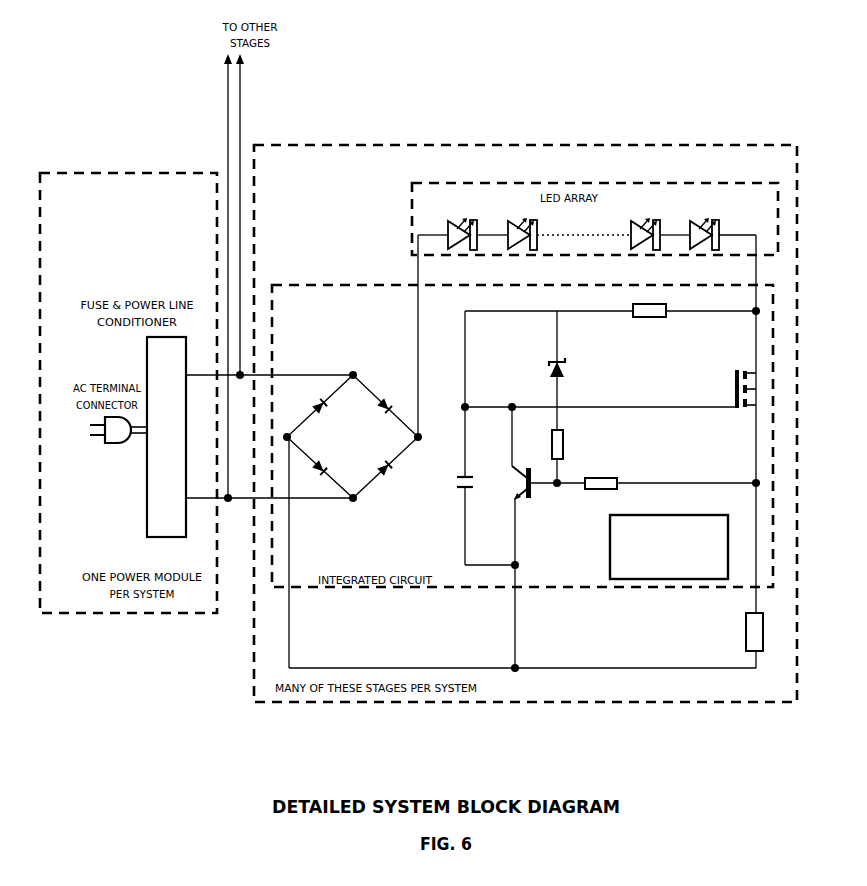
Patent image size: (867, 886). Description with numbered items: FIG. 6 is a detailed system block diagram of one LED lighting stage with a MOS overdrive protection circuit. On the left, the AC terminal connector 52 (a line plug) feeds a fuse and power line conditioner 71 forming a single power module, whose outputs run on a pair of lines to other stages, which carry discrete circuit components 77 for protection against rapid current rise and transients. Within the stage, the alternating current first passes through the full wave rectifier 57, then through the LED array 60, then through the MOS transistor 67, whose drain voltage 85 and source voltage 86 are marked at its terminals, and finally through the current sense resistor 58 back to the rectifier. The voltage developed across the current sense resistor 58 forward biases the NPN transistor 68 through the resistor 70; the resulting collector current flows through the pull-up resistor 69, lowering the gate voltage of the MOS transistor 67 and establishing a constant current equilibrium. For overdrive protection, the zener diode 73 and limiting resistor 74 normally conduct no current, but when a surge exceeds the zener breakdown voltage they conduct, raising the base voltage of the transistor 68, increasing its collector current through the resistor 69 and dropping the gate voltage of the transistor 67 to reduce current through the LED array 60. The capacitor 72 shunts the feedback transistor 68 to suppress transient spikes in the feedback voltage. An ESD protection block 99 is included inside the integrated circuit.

The AC terminal connector 52 is at (118, 439).
The fuse and power line conditioner 71 is at (166, 447).
The discrete circuit components 77 is at (241, 278).
The full wave rectifier 57 is at (352, 436).
The LED array 60 is at (583, 222).
The pull-up resistor 69 is at (649, 320).
The zener diode 73 is at (566, 370).
The limiting resistor 74 is at (566, 444).
The MOS transistor 67 is at (731, 389).
The drain voltage 85 is at (761, 365).
The source voltage 86 is at (761, 408).
The capacitor 72 is at (455, 490).
The NPN transistor 68 is at (525, 464).
The resistor 70 is at (601, 495).
The ESD protection device 99 is at (658, 547).
The current sense resistor 58 is at (745, 632).